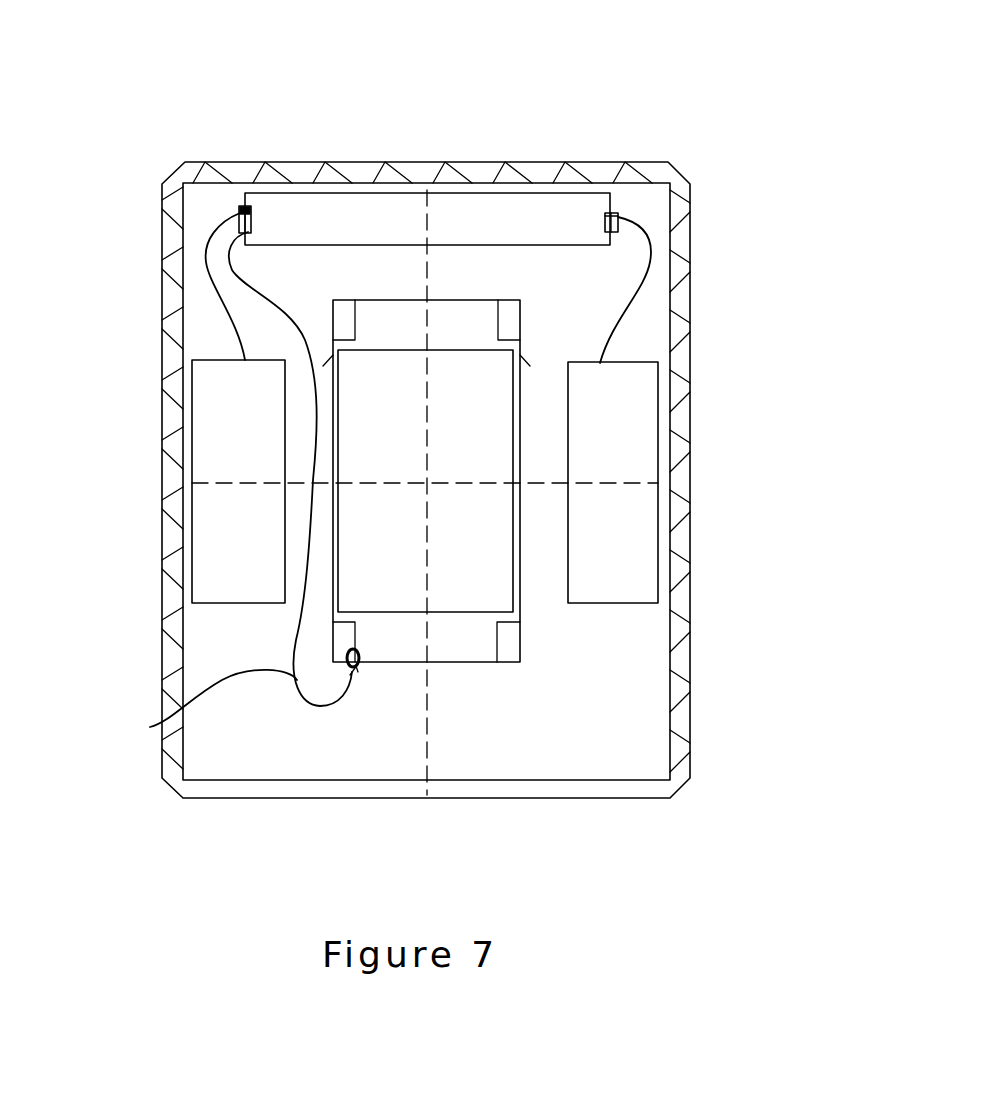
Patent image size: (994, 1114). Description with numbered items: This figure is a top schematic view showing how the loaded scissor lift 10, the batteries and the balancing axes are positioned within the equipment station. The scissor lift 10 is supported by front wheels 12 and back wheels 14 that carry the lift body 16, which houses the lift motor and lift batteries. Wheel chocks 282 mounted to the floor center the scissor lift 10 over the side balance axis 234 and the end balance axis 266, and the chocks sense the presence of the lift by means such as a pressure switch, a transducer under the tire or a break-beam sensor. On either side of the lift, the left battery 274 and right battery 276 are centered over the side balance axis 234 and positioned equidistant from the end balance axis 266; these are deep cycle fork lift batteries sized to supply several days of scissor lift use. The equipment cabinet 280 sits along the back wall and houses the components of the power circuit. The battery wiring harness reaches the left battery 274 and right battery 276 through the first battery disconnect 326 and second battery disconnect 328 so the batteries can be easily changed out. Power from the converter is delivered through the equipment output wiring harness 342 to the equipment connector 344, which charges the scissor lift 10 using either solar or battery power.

The scissor lift 10 is at (455, 298).
The front wheels 12 is at (620, 217).
The back wheels 14 is at (355, 668).
The lift body 16 is at (358, 672).
The side balance axis 234 is at (640, 483).
The end balance axis 266 is at (427, 740).
The left battery 274 is at (227, 360).
The right battery 276 is at (618, 362).
The equipment cabinet 280 is at (548, 197).
The wheel chocks 282 is at (350, 300).
The first battery disconnect 326 is at (235, 205).
The second battery disconnect 328 is at (522, 310).
The equipment output wiring harness 342 is at (150, 727).
The equipment connector 344 is at (352, 672).